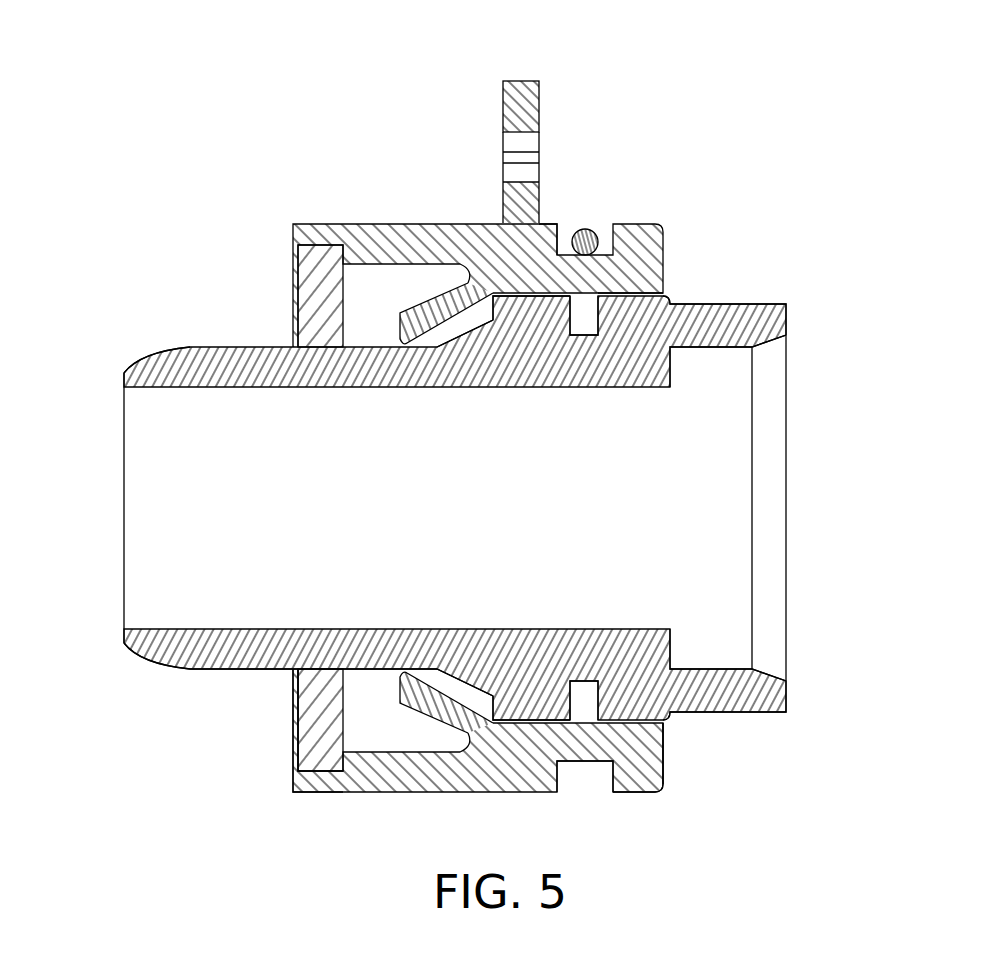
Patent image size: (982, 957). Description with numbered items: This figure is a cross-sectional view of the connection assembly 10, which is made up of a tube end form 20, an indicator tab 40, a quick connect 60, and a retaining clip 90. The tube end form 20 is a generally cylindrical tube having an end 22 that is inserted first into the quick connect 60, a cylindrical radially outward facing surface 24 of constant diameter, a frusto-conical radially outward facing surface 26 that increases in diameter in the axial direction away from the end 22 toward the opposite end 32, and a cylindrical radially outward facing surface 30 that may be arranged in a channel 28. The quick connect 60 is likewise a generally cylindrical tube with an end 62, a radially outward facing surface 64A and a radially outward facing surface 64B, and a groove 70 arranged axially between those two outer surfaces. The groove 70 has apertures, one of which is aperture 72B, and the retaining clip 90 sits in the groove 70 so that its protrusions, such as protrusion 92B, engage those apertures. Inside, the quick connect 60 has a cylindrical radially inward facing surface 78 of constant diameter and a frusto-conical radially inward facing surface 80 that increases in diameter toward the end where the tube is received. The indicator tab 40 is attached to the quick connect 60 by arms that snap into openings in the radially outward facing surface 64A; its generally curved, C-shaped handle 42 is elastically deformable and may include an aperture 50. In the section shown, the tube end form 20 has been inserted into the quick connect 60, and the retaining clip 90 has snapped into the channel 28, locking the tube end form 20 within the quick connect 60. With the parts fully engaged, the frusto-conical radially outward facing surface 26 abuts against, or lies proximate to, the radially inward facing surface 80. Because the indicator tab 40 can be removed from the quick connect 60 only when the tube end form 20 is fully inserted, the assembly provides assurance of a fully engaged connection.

The connection assembly 10 is at (678, 114).
The tube end form 20 is at (192, 345).
The end 22 is at (122, 373).
The radially outward facing surface 24 is at (195, 672).
The radially outward facing surface 26 is at (464, 703).
The channel 28 is at (562, 665).
The radially outward facing surface 30 is at (581, 670).
The end 32 is at (789, 336).
The indicator tab 40 is at (515, 126).
The handle 42 is at (540, 107).
The aperture 50 is at (497, 144).
The quick connect 60 is at (334, 224).
The end 62 is at (292, 232).
The radially outward facing surface 64A is at (323, 793).
The radially outward facing surface 64B is at (645, 794).
The groove 70 is at (586, 790).
The aperture 72B is at (549, 223).
The radially inward facing surface 78 is at (640, 297).
The radially inward facing surface 80 is at (440, 682).
The retaining clip 90 is at (594, 228).
The protrusion 92B is at (578, 306).